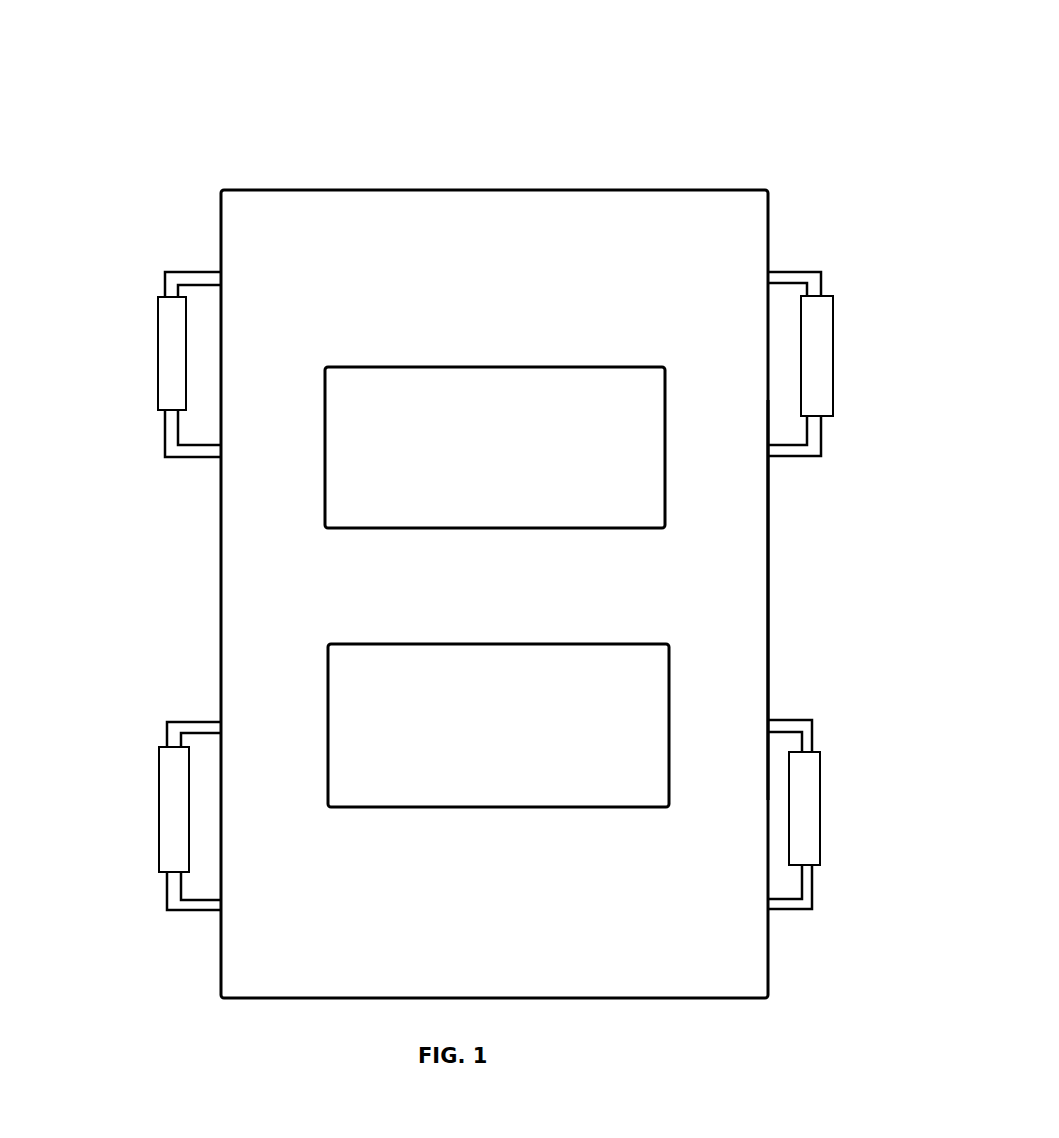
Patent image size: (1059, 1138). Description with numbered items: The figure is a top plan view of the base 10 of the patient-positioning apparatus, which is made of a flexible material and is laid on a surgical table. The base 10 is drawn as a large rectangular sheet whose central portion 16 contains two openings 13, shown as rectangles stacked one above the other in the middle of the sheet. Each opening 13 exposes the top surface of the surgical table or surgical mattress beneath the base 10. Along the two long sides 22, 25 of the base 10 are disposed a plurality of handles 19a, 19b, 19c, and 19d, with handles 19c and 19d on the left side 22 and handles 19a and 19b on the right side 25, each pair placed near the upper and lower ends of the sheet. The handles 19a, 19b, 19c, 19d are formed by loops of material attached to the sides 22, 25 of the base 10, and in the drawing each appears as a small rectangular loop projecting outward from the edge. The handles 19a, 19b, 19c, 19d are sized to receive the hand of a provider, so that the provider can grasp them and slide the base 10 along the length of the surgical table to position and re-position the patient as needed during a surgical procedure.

The base 10 is at (657, 88).
The opening 13 is at (371, 467).
The central portion 16 is at (498, 600).
The handle 19a is at (815, 352).
The handle 19b is at (803, 813).
The handle 19c is at (170, 363).
The handle 19d is at (173, 820).
The side 22 is at (220, 599).
The side 25 is at (770, 592).